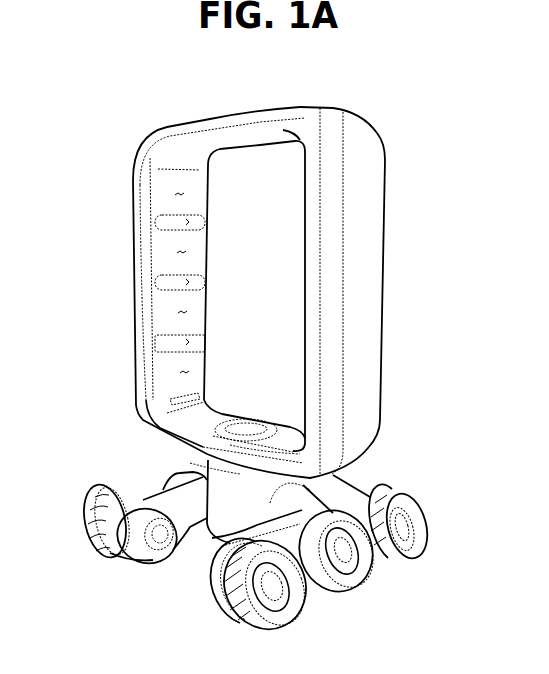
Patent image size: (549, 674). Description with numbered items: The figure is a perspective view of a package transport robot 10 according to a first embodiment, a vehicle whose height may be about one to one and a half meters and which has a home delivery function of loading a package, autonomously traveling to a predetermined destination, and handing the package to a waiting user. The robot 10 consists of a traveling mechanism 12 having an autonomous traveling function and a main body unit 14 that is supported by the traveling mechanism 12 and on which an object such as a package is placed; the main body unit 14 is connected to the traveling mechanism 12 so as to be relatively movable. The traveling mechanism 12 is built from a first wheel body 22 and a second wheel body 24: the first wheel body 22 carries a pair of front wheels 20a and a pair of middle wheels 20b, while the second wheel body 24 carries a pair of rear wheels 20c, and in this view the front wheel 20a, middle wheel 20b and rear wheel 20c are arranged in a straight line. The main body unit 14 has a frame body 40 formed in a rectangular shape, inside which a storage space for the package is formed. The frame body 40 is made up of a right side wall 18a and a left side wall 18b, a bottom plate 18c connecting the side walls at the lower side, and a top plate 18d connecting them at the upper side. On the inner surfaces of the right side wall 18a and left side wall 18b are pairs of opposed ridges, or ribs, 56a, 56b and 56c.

The package transport robot 10 is at (245, 661).
The traveling mechanism 12 is at (364, 471).
The main body unit 14 is at (398, 250).
The right side wall 18a is at (376, 198).
The left side wall 18b is at (130, 246).
The bottom plate 18c is at (175, 443).
The top plate 18d is at (256, 110).
The front wheel 20a is at (94, 491).
The middle wheel 20b is at (177, 470).
The rear wheel 20c is at (422, 546).
The first wheel body 22 is at (207, 598).
The second wheel body 24 is at (380, 482).
The frame body 40 is at (383, 330).
The ridge 56a is at (205, 222).
The ridge 56b is at (205, 280).
The ridge 56c is at (205, 338).